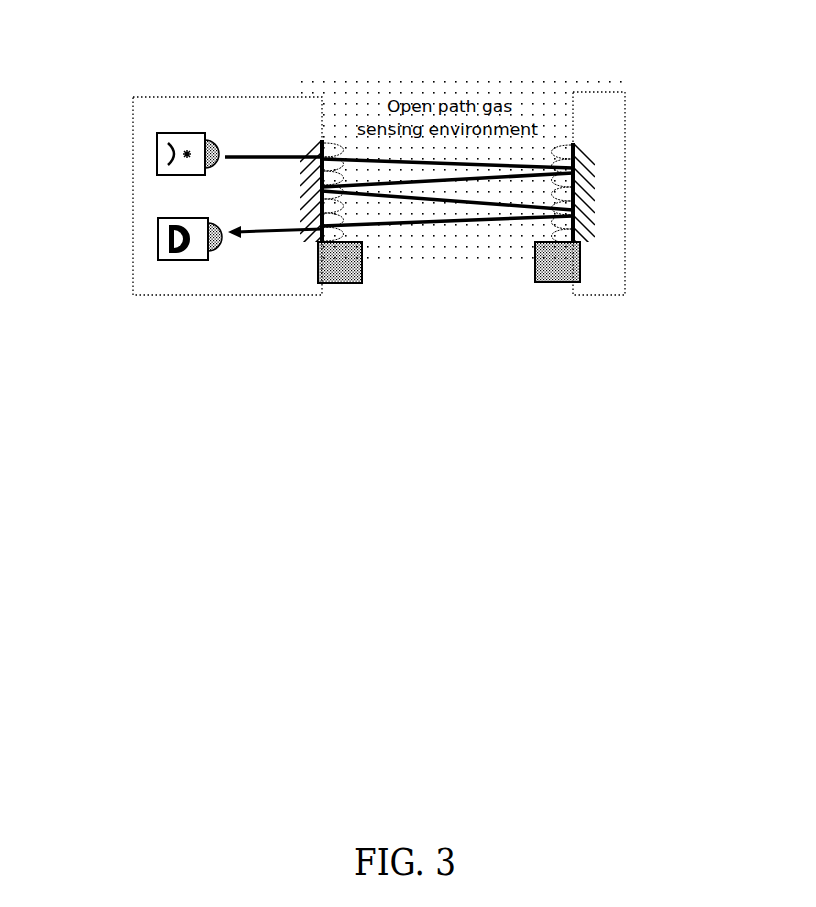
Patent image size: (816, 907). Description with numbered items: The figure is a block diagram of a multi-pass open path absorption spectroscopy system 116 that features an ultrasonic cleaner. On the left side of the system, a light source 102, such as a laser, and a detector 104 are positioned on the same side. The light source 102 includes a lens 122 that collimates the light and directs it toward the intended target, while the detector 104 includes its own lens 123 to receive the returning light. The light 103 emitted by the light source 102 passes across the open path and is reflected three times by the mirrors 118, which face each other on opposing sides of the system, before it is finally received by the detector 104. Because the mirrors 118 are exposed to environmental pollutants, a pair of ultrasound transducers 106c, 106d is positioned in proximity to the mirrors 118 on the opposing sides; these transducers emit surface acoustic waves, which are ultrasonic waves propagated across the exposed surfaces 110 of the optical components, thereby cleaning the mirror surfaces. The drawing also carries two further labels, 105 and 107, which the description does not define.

The light source 102 is at (172, 137).
The lens 122 is at (217, 140).
The detector 104 is at (158, 235).
The lens 123 is at (220, 252).
The light 103 is at (287, 235).
The open path gas sensing environment 105 is at (462, 143).
The optical beam path 107 is at (352, 232).
The exposed surfaces 110 is at (328, 157).
The multi-pass open path absorption spectroscopy system 116 is at (192, 297).
The mirrors 118 is at (320, 140).
The ultrasound transducer 106c is at (357, 280).
The ultrasound transducer 106d is at (551, 267).